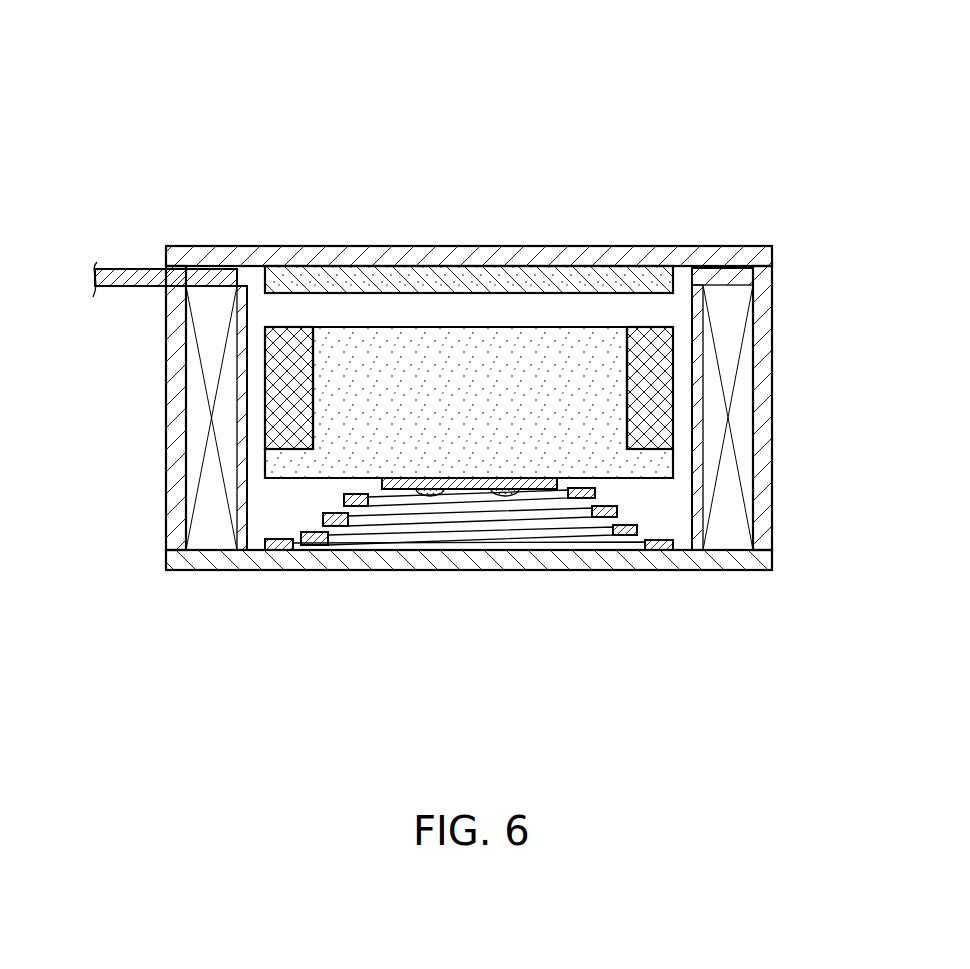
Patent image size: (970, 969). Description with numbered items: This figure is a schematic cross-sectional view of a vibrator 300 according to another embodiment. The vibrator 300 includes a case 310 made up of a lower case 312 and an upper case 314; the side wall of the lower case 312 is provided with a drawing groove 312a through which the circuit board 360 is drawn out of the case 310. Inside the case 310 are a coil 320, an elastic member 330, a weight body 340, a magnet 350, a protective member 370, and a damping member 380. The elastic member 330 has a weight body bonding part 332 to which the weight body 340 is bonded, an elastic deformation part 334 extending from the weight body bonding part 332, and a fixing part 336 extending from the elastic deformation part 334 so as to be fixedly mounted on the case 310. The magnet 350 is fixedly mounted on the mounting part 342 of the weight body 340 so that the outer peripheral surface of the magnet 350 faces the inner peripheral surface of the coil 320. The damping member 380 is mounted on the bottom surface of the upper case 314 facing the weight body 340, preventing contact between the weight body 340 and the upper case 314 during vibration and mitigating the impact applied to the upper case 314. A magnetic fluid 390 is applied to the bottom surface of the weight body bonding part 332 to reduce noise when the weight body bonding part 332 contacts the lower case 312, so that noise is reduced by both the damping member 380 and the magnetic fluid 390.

The vibrator 300 is at (782, 44).
The case 310 is at (897, 261).
The lower case 312 is at (767, 340).
The drawing groove 312a is at (165, 278).
The upper case 314 is at (762, 257).
The coil 320 is at (207, 502).
The elastic member 330 is at (503, 727).
The weight body bonding part 332 is at (435, 480).
The elastic deformation part 334 is at (338, 540).
The fixing part 336 is at (283, 548).
The weight body 340 is at (478, 370).
The mounting part 342 is at (650, 345).
The magnet 350 is at (296, 345).
The circuit board 360 is at (120, 272).
The protective member 370 is at (697, 320).
The damping member 380 is at (401, 278).
The magnetic fluid 390 is at (505, 498).